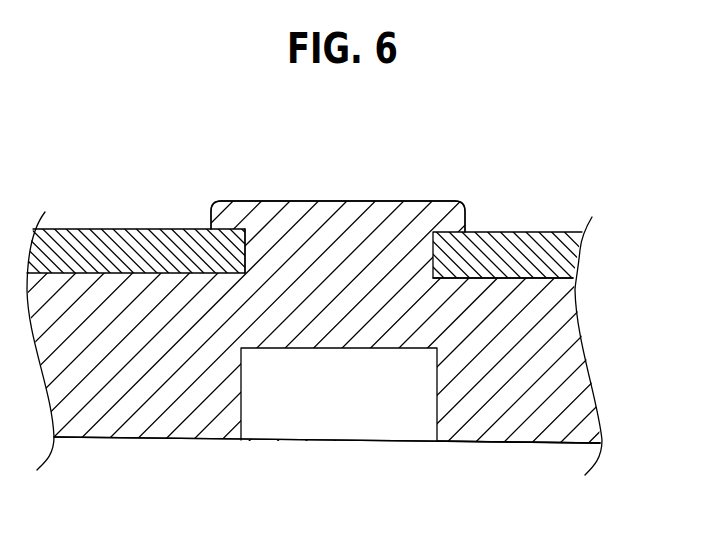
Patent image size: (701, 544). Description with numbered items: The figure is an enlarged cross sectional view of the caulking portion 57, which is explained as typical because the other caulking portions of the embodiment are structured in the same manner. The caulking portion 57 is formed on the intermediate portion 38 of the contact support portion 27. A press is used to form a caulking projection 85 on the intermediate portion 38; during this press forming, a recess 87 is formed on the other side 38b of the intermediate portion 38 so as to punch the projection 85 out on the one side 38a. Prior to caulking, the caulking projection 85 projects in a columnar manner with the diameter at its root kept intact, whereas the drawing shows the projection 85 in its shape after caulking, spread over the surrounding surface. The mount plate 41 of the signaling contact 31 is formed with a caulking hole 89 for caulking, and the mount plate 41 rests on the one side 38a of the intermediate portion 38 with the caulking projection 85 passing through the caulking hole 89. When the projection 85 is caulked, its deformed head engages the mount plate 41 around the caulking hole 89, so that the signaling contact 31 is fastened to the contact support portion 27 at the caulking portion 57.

The contact support portion 27 is at (597, 368).
The signaling contact 31 is at (532, 232).
The intermediate portion 38 is at (547, 443).
The one side of the intermediate portion 38a is at (543, 278).
The other side of the intermediate portion 38b is at (483, 443).
The mount plate 41 is at (95, 229).
The caulking portion 57 is at (410, 183).
The caulking projection 85 is at (341, 201).
The recess 87 is at (435, 402).
The caulking hole 89 is at (248, 255).